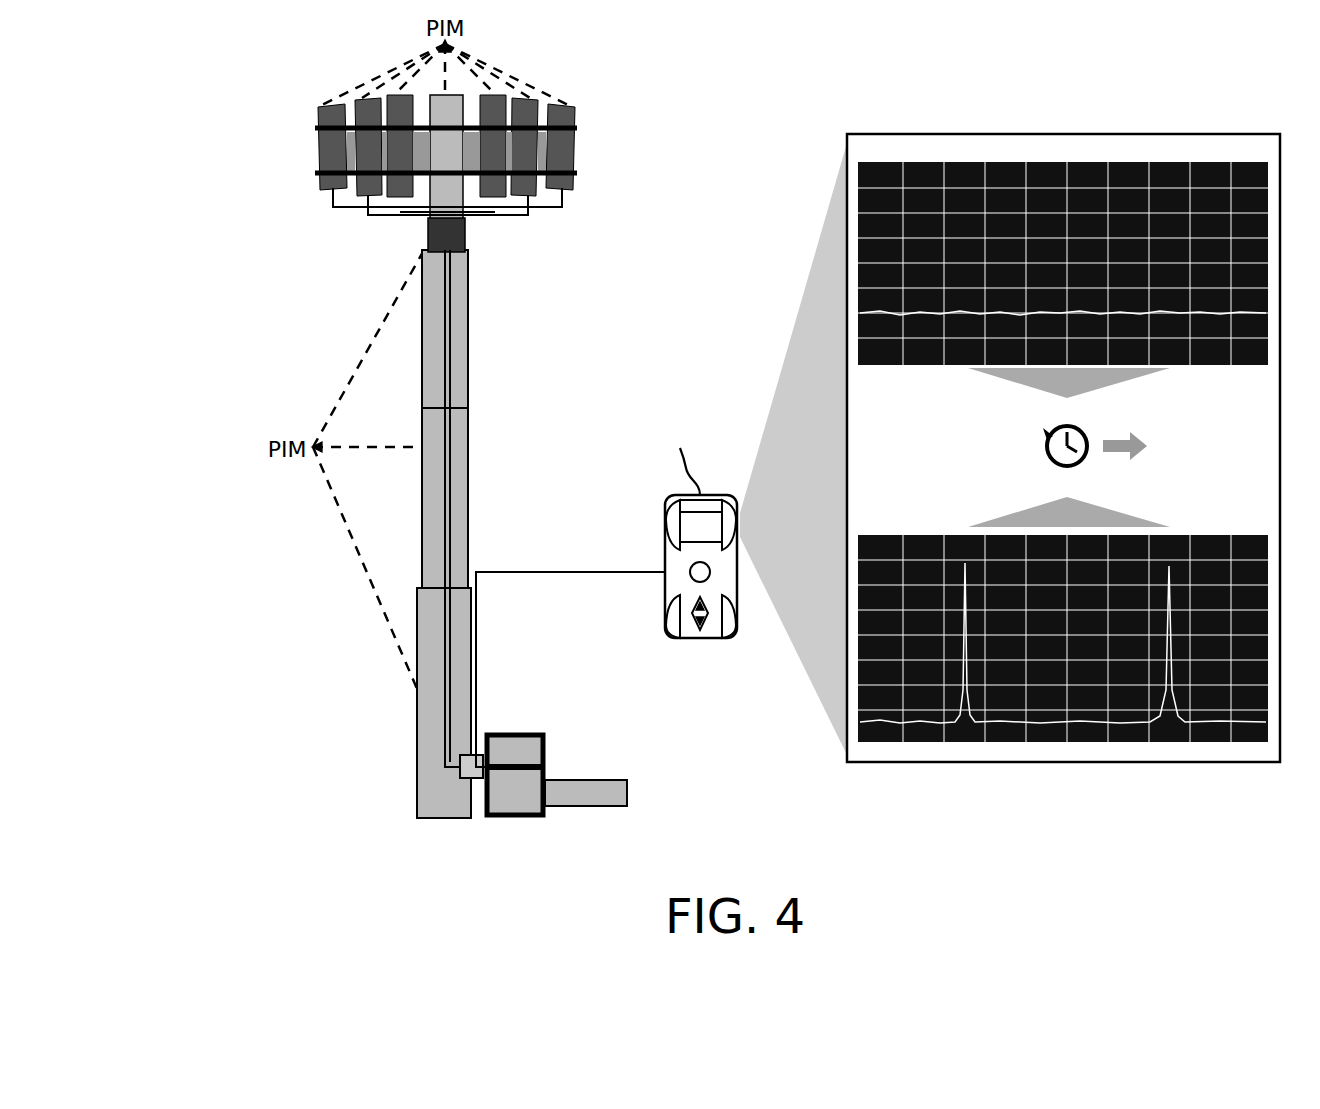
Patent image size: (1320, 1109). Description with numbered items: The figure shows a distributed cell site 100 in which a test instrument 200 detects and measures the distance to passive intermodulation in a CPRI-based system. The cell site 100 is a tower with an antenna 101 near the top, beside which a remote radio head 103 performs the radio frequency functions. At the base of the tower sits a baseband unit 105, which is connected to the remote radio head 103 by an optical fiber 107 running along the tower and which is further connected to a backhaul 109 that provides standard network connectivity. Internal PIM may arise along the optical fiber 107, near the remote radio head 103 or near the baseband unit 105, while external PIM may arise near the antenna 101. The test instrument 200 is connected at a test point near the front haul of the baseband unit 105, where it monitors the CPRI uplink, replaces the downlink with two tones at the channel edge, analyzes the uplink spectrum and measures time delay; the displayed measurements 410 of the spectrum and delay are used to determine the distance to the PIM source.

The distributed cell site 100 is at (236, 301).
The antenna 101 is at (318, 178).
The remote radio head (RRH) 103 is at (463, 238).
The baseband unit (BBU) 105 is at (528, 738).
The optical fiber 107 is at (453, 515).
The backhaul 109 is at (619, 779).
The test instrument 200 is at (661, 434).
The display screenshots 410 is at (925, 148).